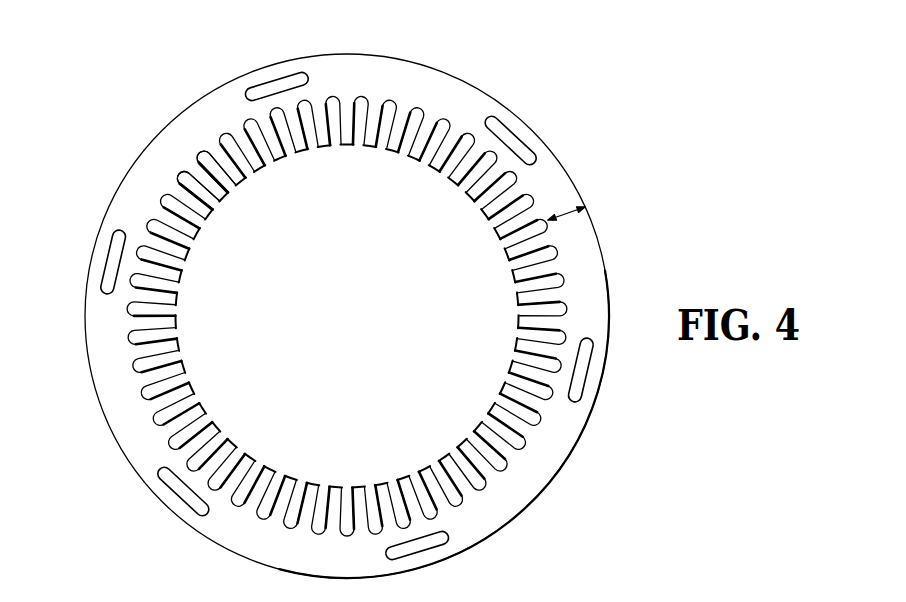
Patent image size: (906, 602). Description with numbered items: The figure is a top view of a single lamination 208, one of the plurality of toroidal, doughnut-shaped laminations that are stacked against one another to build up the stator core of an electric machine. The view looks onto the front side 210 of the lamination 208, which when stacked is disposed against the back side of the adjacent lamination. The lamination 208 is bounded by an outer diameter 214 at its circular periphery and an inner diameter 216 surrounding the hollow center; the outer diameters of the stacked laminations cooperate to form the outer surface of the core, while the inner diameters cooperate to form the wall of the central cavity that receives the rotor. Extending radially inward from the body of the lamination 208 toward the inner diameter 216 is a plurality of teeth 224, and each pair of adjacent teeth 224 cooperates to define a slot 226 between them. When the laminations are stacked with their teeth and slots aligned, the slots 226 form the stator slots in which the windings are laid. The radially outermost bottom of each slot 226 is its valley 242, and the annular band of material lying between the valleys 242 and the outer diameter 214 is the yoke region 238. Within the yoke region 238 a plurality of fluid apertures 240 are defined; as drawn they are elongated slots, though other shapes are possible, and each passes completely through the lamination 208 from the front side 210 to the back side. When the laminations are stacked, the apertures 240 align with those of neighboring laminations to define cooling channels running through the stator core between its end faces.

The lamination 208 is at (346, 311).
The front side 210 is at (190, 120).
The outer diameter 214 is at (112, 198).
The inner diameter 216 is at (227, 197).
The teeth 224 is at (283, 162).
The slots 226 is at (308, 127).
The yoke region 238 is at (568, 215).
The fluid apertures 240 is at (519, 130).
The valley 242 is at (550, 228).